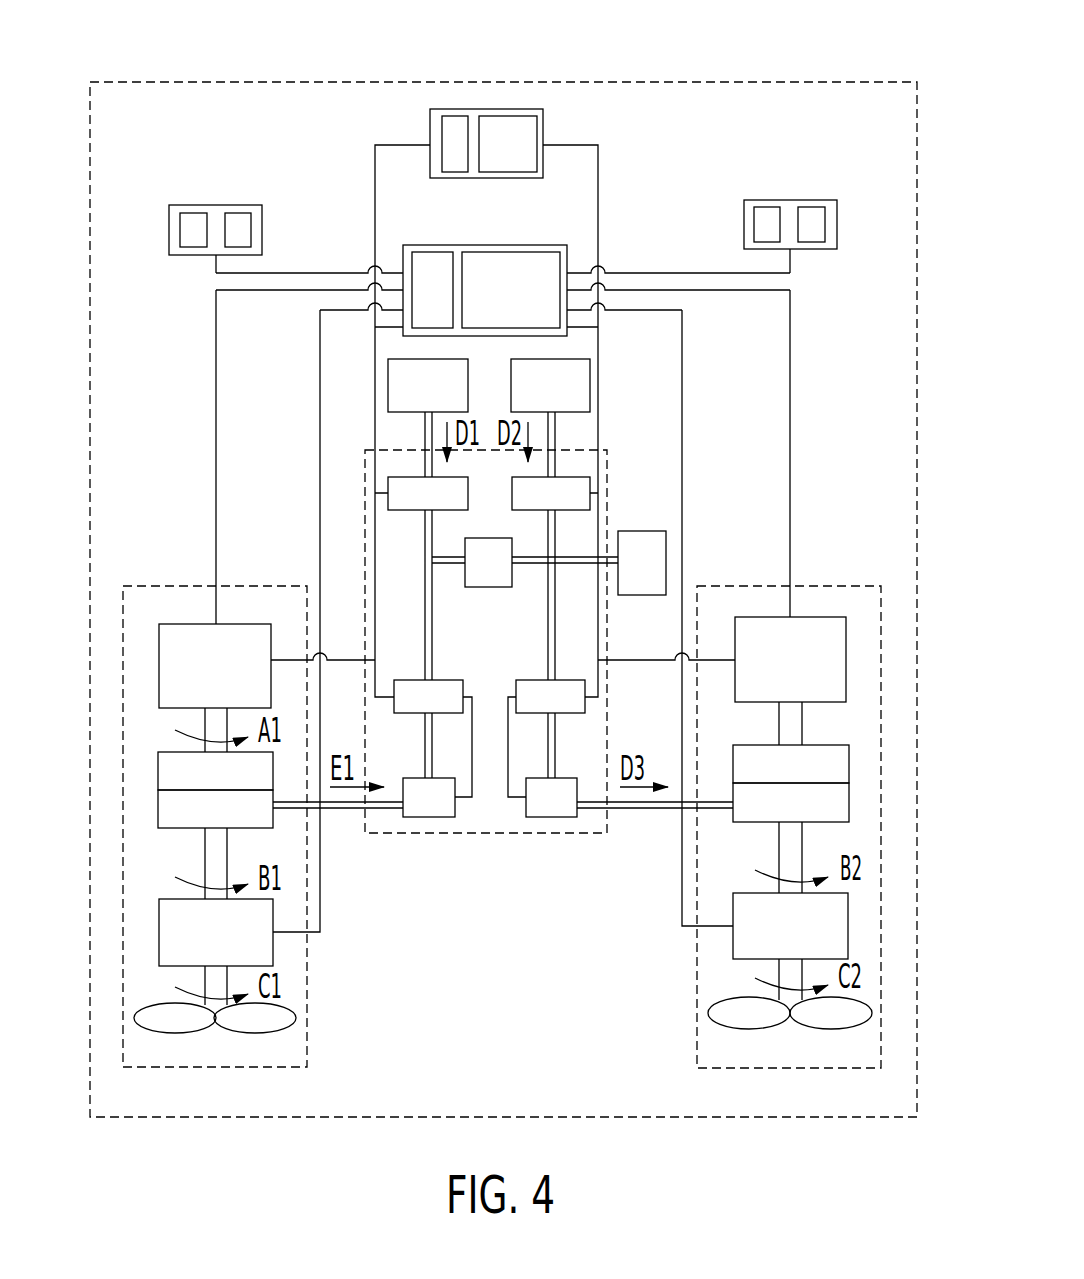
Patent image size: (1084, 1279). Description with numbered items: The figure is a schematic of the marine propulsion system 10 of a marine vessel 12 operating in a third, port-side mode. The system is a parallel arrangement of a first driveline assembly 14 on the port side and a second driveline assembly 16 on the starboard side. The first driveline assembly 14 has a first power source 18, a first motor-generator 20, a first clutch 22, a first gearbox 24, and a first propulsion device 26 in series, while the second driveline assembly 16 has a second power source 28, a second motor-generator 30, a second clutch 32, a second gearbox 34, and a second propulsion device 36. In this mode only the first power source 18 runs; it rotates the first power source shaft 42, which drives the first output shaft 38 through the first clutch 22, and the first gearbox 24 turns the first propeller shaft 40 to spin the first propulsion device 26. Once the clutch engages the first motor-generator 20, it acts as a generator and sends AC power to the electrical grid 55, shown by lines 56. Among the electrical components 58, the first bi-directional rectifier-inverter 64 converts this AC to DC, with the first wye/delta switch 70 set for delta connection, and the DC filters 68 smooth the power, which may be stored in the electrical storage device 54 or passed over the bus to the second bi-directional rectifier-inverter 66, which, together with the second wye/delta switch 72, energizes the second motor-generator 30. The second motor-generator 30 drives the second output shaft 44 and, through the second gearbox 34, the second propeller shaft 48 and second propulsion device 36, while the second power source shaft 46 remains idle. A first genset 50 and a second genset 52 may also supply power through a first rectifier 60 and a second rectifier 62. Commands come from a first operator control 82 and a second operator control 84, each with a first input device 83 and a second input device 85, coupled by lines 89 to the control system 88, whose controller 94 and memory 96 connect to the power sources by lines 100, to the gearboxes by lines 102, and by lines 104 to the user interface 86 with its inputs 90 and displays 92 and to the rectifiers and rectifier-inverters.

The marine propulsion system 10 is at (185, 357).
The marine vessel 12 is at (720, 80).
The first driveline assembly 14 is at (120, 612).
The second driveline assembly 16 is at (885, 612).
The first power source 18 is at (160, 665).
The first motor-generator 20 is at (168, 812).
The first clutch 22 is at (168, 770).
The first gearbox 24 is at (160, 932).
The first propulsion device 26 is at (135, 1020).
The second power source 28 is at (846, 668).
The second motor-generator 30 is at (840, 810).
The second clutch 32 is at (840, 768).
The second gearbox 34 is at (848, 928).
The second propulsion device 36 is at (870, 1013).
The first output shaft 38 is at (205, 870).
The first propeller shaft 40 is at (205, 992).
The first power source shaft 42 is at (205, 722).
The second output shaft 44 is at (802, 832).
The second power source shaft 46 is at (802, 722).
The second propeller shaft 48 is at (803, 995).
The first genset 50 is at (388, 380).
The second genset 52 is at (590, 380).
The electrical storage device 54 is at (666, 555).
The electrical grid 55 is at (835, 357).
The lines 56 is at (425, 610).
The electrical components 58 is at (505, 835).
The first rectifier 60 is at (388, 490).
The second rectifier 62 is at (590, 482).
The first bi-directional rectifier-inverter 64 is at (438, 672).
The second bi-directional rectifier-inverter 66 is at (540, 672).
The DC filters 68 is at (500, 590).
The first wye/delta switch 70 is at (420, 818).
The second wye/delta switch 72 is at (548, 818).
The first operator control 82 is at (215, 205).
The first input device 83 is at (192, 213).
The second operator control 84 is at (790, 200).
The second input device 85 is at (238, 213).
The user interface 86 is at (543, 112).
The control system 88 is at (567, 245).
The lines 89 is at (298, 272).
The inputs 90 is at (455, 112).
The displays 92 is at (500, 112).
The controller 94 is at (500, 252).
The memory 96 is at (432, 252).
The lines 100 is at (216, 440).
The lines 102 is at (320, 908).
The lines 104 is at (375, 410).